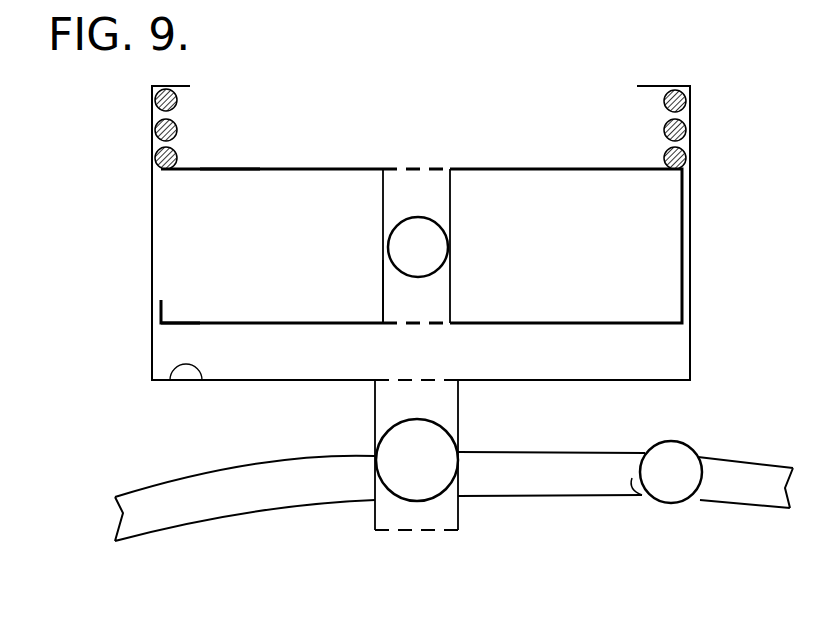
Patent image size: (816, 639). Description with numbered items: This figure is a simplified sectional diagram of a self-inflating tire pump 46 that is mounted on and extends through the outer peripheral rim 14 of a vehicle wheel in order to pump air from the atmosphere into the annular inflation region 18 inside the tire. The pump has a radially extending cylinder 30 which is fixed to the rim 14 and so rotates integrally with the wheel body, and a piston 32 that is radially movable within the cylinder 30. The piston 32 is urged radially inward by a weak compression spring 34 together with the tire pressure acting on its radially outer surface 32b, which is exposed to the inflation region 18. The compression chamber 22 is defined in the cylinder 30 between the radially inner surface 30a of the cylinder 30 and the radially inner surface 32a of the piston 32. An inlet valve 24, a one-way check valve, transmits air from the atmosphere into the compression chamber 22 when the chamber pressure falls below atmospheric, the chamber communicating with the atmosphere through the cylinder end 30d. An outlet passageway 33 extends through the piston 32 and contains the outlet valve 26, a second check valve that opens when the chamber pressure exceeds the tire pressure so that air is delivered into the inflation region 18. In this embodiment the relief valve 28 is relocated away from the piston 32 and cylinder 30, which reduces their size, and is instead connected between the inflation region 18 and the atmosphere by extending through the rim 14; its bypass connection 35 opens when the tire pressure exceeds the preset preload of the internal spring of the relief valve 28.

The outer peripheral rim 14 is at (763, 487).
The annular inflation region 18 is at (390, 141).
The compression chamber 22 is at (440, 365).
The inlet valve 24 is at (442, 413).
The outlet valve 26 is at (435, 232).
The relief valve 28 is at (700, 455).
The cylinder 30 is at (690, 352).
The radially inner surface of the cylinder 30a is at (170, 380).
The housing outlet 30d is at (407, 532).
The piston 32 is at (655, 193).
The radially inner surface of the piston 32a is at (168, 330).
The chamber top wall 32b is at (227, 169).
The outlet passageway 33 is at (383, 290).
The compression spring 34 is at (681, 116).
The bypass passageway 35 is at (632, 495).
The self-inflating tire pump 46 is at (597, 97).